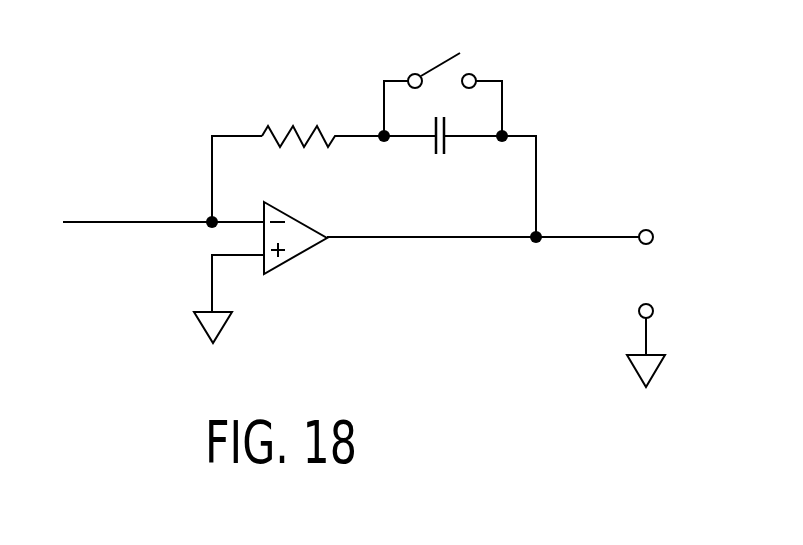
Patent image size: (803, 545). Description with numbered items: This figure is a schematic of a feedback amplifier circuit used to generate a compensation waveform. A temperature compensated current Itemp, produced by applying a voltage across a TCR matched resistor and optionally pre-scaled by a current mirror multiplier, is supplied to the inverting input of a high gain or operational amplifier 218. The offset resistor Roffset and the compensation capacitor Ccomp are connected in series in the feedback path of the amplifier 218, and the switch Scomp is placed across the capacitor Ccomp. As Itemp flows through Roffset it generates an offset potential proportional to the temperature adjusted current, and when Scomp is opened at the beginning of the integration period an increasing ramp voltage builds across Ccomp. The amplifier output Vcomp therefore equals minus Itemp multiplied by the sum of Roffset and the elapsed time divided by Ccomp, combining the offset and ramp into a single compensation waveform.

The operational amplifier 218 is at (298, 220).
The temperature compensated current Itemp is at (118, 207).
The offset resistor Roffset is at (317, 114).
The compensation capacitor Ccomp is at (443, 153).
The compensation switch Scomp is at (443, 71).
The compensation output voltage Vcomp is at (672, 303).